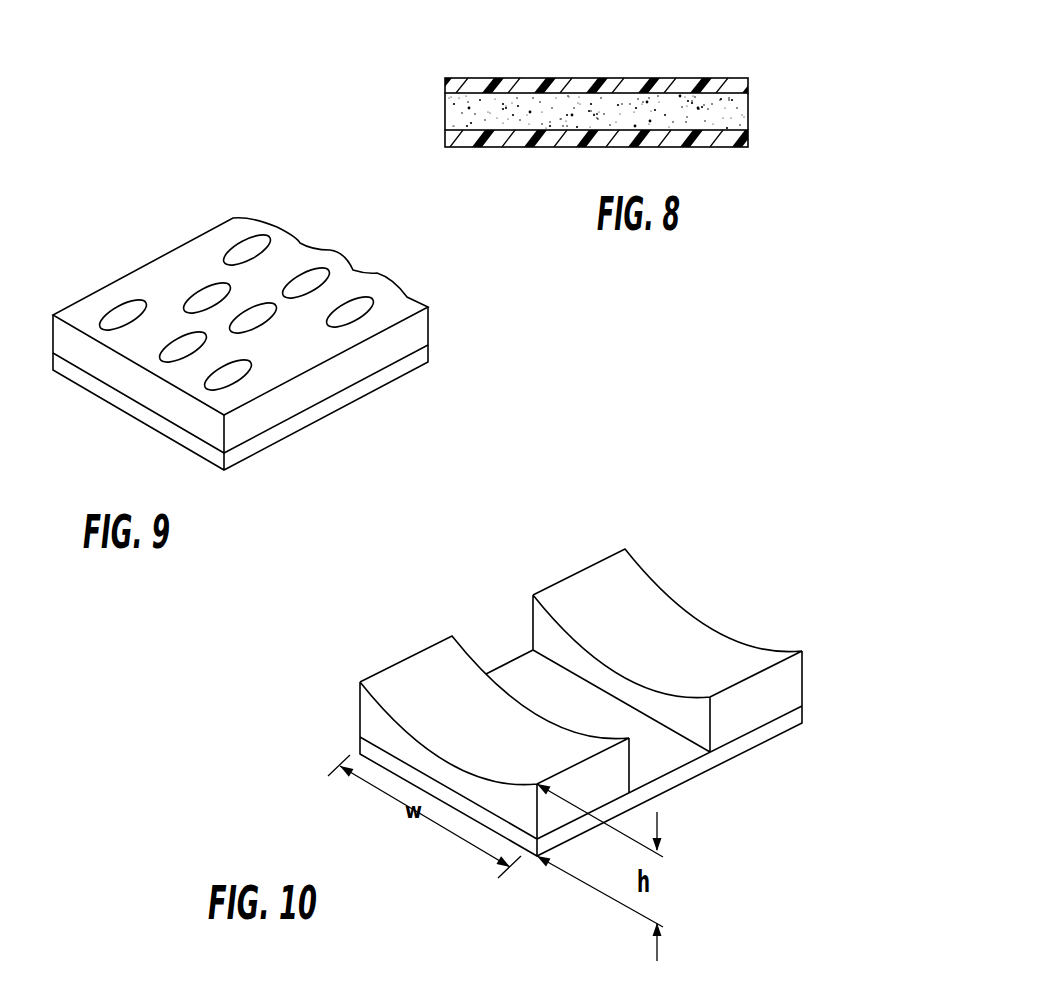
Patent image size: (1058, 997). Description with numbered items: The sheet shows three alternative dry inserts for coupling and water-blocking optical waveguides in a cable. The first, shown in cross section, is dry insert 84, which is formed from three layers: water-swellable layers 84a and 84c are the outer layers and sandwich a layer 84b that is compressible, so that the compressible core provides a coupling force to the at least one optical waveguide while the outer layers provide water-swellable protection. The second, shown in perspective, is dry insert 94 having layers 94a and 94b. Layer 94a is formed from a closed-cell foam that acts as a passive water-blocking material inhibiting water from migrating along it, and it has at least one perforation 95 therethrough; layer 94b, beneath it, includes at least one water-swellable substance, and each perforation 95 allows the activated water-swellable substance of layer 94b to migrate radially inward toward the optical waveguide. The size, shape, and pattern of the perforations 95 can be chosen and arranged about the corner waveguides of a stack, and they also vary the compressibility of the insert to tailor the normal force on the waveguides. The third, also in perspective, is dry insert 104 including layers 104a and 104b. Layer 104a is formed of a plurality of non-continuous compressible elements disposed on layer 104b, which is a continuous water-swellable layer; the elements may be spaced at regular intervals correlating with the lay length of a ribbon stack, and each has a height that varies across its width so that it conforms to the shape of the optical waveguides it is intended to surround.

In FIG. 8, the dry insert 84 is at (584, 89).
In FIG. 8, the water-swellable layer 84a is at (717, 147).
In FIG. 8, the compressible layer 84b is at (738, 115).
In FIG. 8, the water-swellable layer 84c is at (710, 78).
In FIG. 9, the dry insert 94 is at (240, 327).
In FIG. 9, the closed-cell foam layer 94a is at (277, 408).
In FIG. 9, the water-swellable layer 94b is at (242, 460).
In FIG. 9, the perforation 95 is at (258, 308).
In FIG. 10, the dry insert 104 is at (529, 673).
In FIG. 10, the compressible elements layer 104a is at (648, 602).
In FIG. 10, the water-swellable layer 104b is at (660, 755).